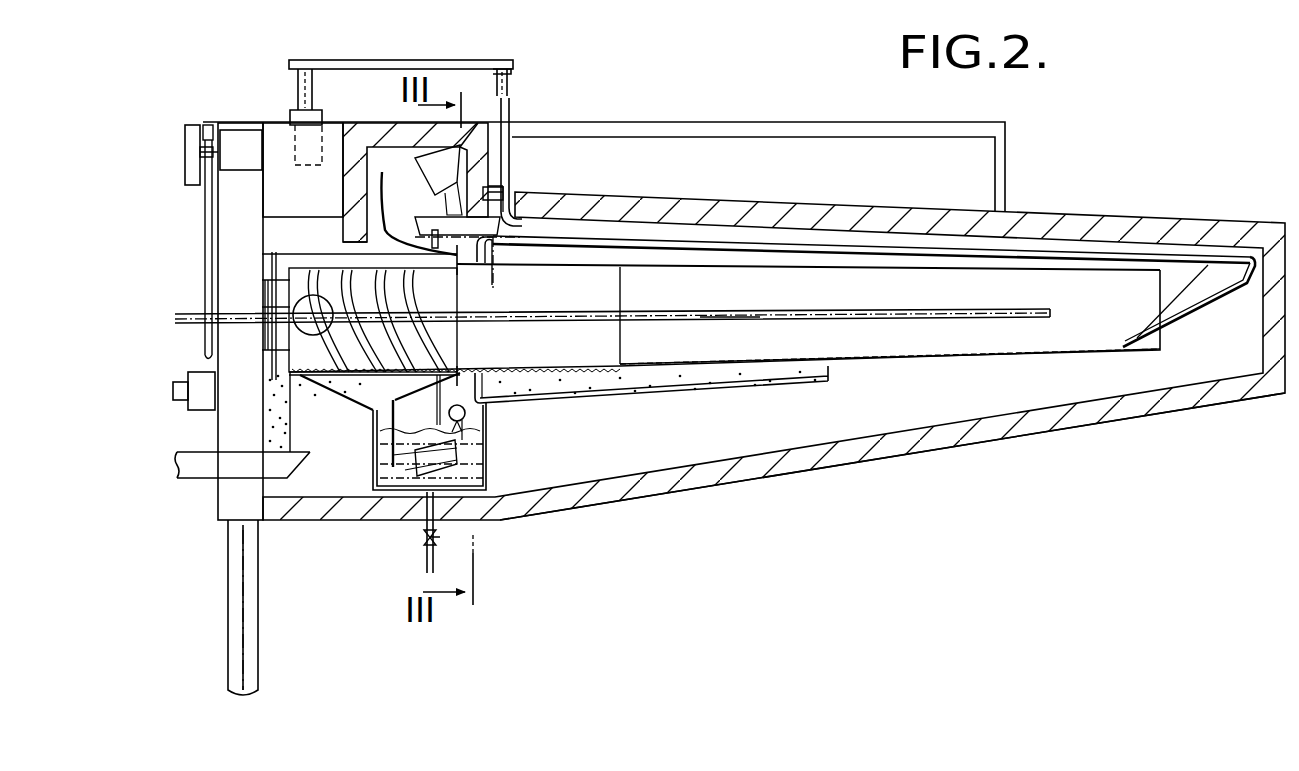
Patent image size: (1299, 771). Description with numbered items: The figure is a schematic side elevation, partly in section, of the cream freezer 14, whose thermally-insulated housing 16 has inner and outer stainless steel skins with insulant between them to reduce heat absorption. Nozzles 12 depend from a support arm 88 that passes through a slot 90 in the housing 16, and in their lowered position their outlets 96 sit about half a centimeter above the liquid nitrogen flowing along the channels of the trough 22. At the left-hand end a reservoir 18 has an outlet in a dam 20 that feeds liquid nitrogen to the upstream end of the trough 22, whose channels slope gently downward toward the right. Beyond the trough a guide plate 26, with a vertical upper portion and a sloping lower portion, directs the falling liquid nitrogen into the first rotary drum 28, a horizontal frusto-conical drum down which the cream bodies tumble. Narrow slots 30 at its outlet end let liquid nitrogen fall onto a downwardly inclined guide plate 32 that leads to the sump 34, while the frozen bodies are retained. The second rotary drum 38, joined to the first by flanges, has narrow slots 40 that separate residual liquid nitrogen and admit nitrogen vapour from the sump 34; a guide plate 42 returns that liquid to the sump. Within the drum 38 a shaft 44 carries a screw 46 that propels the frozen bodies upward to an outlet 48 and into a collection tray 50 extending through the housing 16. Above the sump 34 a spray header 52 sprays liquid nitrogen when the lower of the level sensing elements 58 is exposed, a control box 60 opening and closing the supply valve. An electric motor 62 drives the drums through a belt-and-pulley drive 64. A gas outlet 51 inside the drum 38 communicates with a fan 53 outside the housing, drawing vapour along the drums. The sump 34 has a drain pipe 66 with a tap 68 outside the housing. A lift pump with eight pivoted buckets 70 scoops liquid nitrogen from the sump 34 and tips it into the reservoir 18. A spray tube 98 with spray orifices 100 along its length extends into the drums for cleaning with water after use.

The nozzles 12 is at (514, 102).
The cream freezer 14 is at (848, 480).
The thermally-insulated housing 16 is at (940, 440).
The reservoir 18 is at (427, 220).
The dam or baffle 20 is at (488, 265).
The trough 22 is at (778, 245).
The guide plate 26 is at (1212, 305).
The first rotary drum 28 is at (1123, 270).
The narrow slots 30 is at (720, 270).
The guide plate 32 is at (738, 387).
The sump 34 is at (483, 462).
The second rotary drum 38 is at (327, 262).
The narrow slots 40 is at (303, 380).
The guide plate 42 is at (303, 387).
The shaft 44 is at (236, 325).
The screw 46 is at (423, 337).
The outlet 48 is at (285, 440).
The collection tray or device 50 is at (200, 452).
The gas outlet 51 is at (297, 298).
The spray header 52 is at (465, 418).
The fan 53 is at (200, 378).
The level sensing elements 58 is at (381, 445).
The control box 60 is at (190, 128).
The electric motor 62 is at (240, 140).
The belt-and-pulley drive 64 is at (205, 295).
The drain pipe 66 is at (440, 527).
The tap 68 is at (423, 537).
The buckets 70 is at (425, 150).
The support arm 88 is at (440, 50).
The slot 90 is at (513, 200).
The outlets 96 is at (513, 233).
The spray tube 98 is at (832, 312).
The spray orifices 100 is at (700, 316).